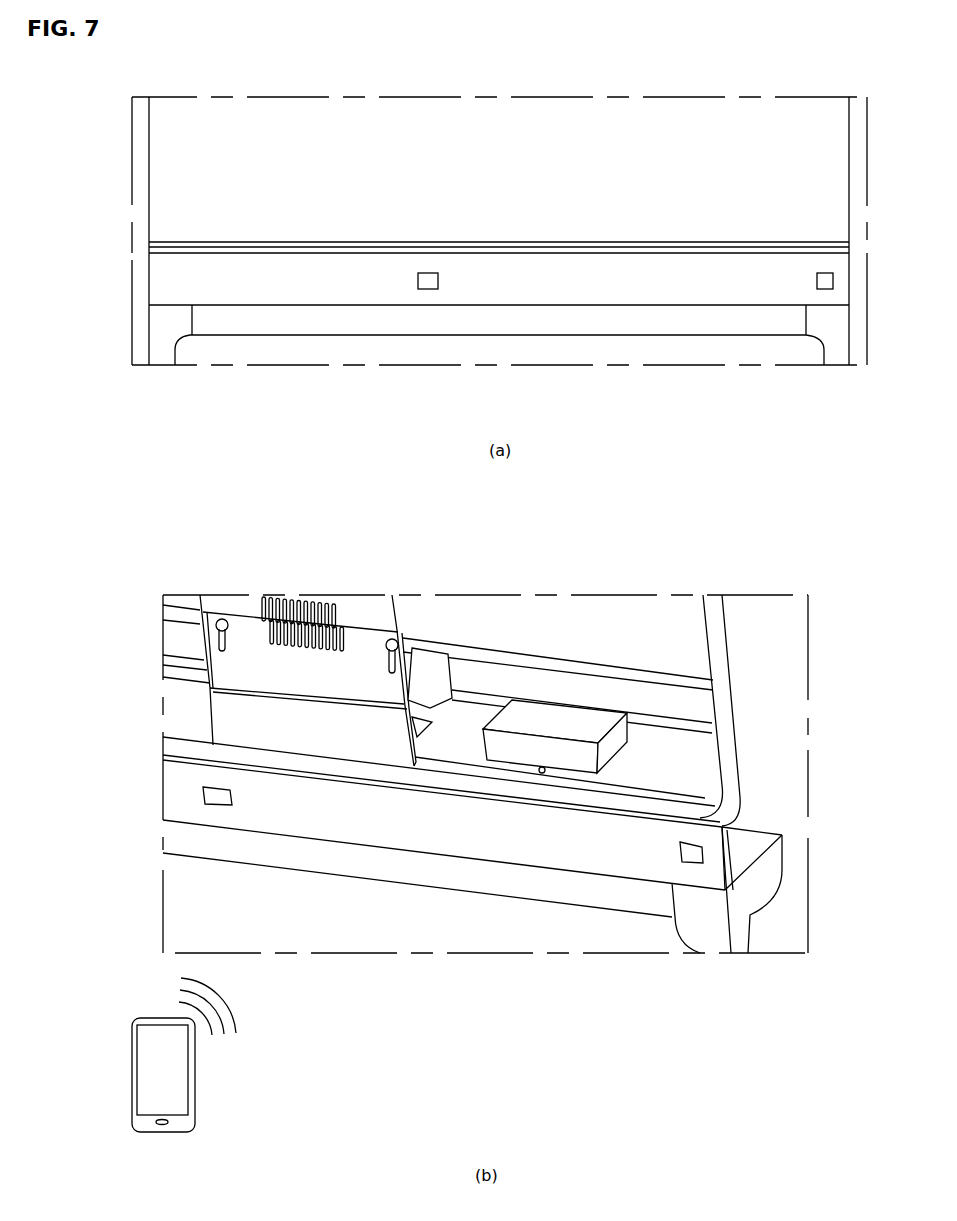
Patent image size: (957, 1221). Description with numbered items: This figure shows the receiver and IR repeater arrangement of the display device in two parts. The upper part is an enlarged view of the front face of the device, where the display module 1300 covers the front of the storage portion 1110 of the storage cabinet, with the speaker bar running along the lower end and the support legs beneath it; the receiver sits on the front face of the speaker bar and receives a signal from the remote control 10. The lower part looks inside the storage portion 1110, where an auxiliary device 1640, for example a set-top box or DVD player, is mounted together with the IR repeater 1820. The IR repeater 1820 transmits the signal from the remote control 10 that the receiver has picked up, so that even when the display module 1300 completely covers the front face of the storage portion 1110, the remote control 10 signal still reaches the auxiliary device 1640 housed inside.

The display module 1300 is at (176, 172).
The storage portion 1110 is at (678, 642).
The auxiliary device 1640 is at (608, 747).
The IR repeater 1820 is at (542, 773).
The remote control 10 is at (148, 1065).